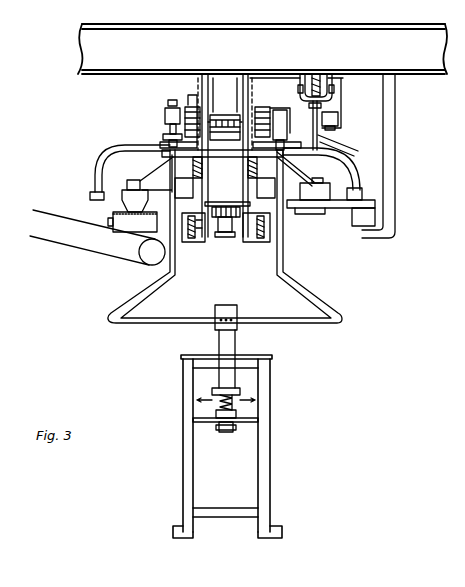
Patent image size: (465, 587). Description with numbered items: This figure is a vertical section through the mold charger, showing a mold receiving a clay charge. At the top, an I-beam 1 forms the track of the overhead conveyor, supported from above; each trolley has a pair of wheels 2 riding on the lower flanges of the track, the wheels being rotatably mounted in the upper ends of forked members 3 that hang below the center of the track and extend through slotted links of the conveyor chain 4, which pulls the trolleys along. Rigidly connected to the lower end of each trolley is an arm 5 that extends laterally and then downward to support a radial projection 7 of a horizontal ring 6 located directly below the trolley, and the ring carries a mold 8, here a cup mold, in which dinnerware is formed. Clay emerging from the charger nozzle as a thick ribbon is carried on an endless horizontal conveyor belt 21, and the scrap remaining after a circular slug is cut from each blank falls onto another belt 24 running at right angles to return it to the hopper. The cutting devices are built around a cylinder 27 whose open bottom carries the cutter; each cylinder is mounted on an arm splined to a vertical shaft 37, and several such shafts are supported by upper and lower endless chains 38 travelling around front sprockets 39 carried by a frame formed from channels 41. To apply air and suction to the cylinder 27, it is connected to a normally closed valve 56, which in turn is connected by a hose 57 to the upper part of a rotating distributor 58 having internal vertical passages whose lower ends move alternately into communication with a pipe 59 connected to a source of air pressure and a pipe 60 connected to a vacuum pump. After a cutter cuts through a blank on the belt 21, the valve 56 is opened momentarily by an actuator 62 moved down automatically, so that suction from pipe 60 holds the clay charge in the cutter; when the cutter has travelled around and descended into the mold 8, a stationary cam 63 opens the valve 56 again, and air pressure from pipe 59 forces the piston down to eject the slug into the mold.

The I-beam 1 is at (302, 78).
The wheels 2 is at (329, 82).
The forked members 3 is at (329, 107).
The conveyor chain 4 is at (328, 118).
The arm 5 is at (347, 149).
The horizontal ring 6 is at (302, 210).
The radial projection 7 is at (353, 219).
The mold 8 is at (322, 210).
The endless horizontal conveyor belt 21 is at (116, 218).
The belt 24 is at (72, 219).
The cylinder 27 is at (332, 170).
The vertical shaft 37 is at (246, 160).
The endless chains 38 is at (185, 241).
The front pair of sprockets 39 is at (228, 236).
The channels 41 is at (220, 160).
The normally closed valve 56 is at (283, 158).
The hose 57 is at (159, 292).
The rotating distributor 58 is at (232, 345).
The pipe 59 is at (238, 408).
The pipe 60 is at (206, 397).
The actuator 62 is at (167, 129).
The stationary cam 63 is at (280, 128).